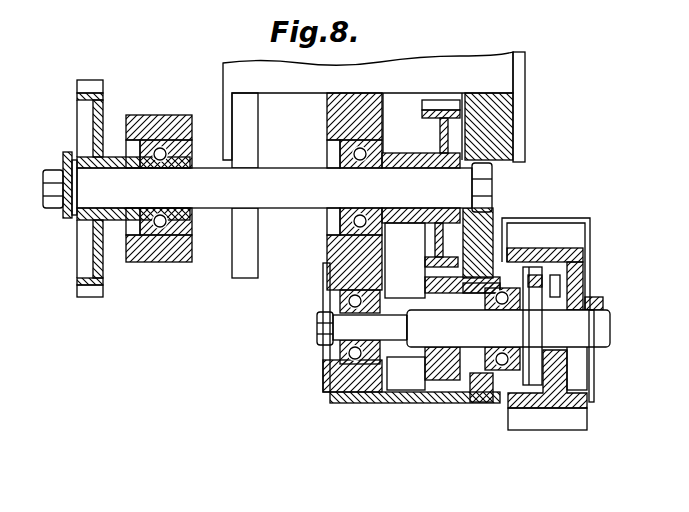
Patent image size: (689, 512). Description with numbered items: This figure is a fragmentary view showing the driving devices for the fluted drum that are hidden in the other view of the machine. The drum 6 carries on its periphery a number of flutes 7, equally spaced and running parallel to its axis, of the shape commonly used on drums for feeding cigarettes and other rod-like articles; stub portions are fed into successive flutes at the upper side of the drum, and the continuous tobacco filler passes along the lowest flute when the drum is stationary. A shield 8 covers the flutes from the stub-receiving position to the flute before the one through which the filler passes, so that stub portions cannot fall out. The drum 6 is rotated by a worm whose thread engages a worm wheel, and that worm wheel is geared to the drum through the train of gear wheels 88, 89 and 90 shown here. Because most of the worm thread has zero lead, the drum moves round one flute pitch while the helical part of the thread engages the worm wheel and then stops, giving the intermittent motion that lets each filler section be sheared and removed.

The gear wheel 88 is at (100, 298).
The gear wheel 89 is at (438, 118).
The gear wheel 90 is at (447, 372).
The drum 6 is at (503, 395).
The flutes 7 is at (538, 418).
The shield 8 is at (592, 402).